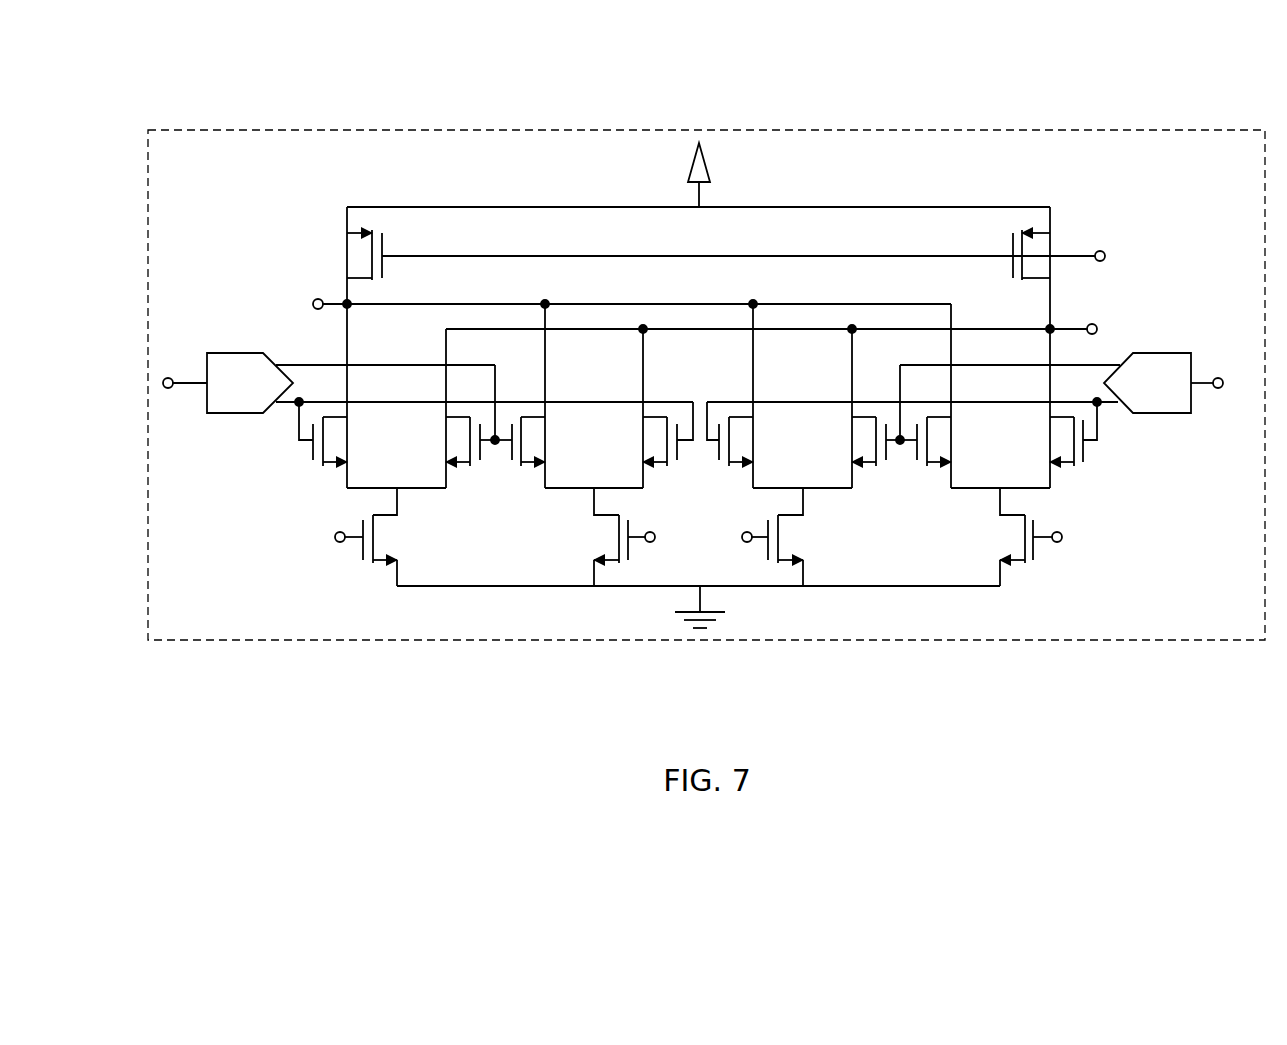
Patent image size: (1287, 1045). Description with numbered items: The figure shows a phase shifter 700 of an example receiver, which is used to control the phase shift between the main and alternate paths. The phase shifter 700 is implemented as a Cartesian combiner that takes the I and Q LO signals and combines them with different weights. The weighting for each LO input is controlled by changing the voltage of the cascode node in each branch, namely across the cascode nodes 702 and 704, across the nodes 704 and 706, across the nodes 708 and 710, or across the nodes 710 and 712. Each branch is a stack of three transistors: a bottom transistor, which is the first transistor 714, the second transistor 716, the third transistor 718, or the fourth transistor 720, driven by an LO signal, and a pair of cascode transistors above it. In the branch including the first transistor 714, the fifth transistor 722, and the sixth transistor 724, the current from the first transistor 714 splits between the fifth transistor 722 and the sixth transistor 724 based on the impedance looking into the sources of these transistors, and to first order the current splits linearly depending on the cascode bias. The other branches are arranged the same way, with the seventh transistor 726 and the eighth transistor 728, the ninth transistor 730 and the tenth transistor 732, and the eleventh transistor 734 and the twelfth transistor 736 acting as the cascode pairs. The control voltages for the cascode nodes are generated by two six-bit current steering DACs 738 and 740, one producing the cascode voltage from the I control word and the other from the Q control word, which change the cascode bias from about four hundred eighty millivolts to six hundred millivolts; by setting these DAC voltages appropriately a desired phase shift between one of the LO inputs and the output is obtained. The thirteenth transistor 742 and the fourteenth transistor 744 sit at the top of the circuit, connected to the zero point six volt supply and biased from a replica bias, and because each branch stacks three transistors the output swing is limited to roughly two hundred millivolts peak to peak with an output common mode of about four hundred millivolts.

The phase shifter 700 is at (1000, 130).
The cascode node 702 is at (297, 447).
The cascode node 704 is at (495, 451).
The cascode node 706 is at (683, 451).
The cascode node 708 is at (708, 451).
The cascode node 710 is at (897, 451).
The cascode node 712 is at (1105, 452).
The transistor M1 714 is at (368, 570).
The transistor M2 716 is at (582, 562).
The transistor M3 718 is at (817, 554).
The transistor M4 720 is at (1030, 562).
The transistor M5 722 is at (312, 402).
The transistor M6 724 is at (437, 430).
The transistor M7 726 is at (556, 426).
The transistor M8 728 is at (632, 432).
The transistor M9 730 is at (758, 426).
The transistor M10 732 is at (848, 432).
The transistor M11 734 is at (958, 426).
The transistor M12 736 is at (1073, 420).
The 6-bit current steering DAC 738 is at (232, 350).
The 6-bit current steering DAC 740 is at (1164, 350).
The transistor M13 742 is at (334, 220).
The transistor M14 744 is at (1058, 212).